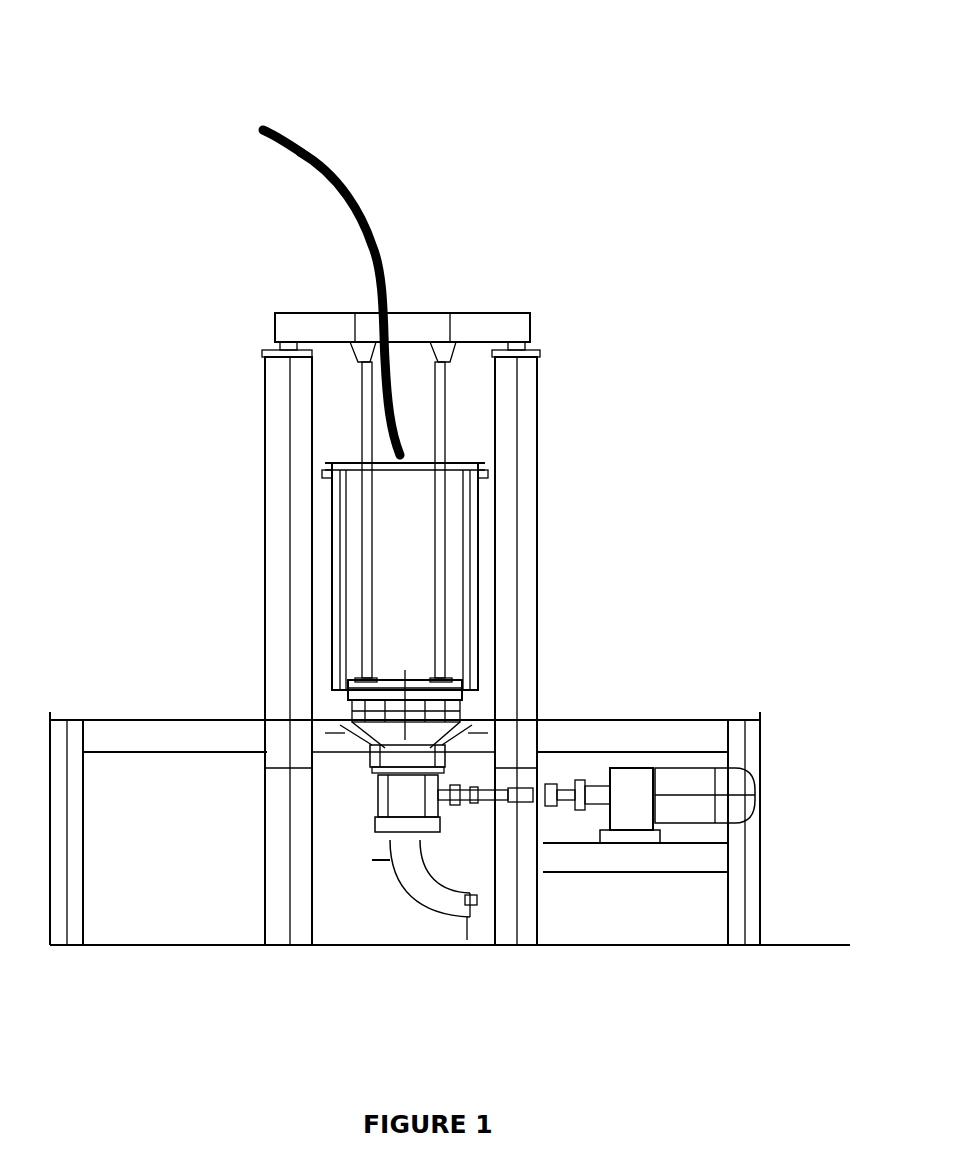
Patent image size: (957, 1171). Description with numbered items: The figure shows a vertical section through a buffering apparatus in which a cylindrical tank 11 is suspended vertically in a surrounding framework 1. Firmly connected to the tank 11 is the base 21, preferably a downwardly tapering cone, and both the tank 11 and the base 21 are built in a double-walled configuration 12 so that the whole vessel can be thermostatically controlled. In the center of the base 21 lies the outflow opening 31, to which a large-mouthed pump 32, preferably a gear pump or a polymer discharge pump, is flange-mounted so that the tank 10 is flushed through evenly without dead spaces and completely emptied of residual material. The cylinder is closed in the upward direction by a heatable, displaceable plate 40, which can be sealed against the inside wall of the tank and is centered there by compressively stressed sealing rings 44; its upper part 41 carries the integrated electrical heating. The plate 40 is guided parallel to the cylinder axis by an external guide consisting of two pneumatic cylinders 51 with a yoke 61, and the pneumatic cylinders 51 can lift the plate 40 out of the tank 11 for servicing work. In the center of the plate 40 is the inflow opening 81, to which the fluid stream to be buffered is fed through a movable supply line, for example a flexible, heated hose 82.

The framework 1 is at (290, 630).
The tank 10 is at (596, 547).
The cylindrical tank 11 is at (342, 530).
The double-walled configuration 12 is at (462, 540).
The base 21 is at (385, 750).
The outflow opening 31 is at (385, 778).
The pump 32 is at (405, 788).
The displaceable plate 40 is at (432, 735).
The upper part 41 is at (440, 712).
The sealing rings 44 is at (362, 700).
The pneumatic cylinders 51 is at (525, 465).
The yoke 61 is at (298, 332).
The inflow opening 81 is at (395, 452).
The flexible heated hose 82 is at (303, 157).